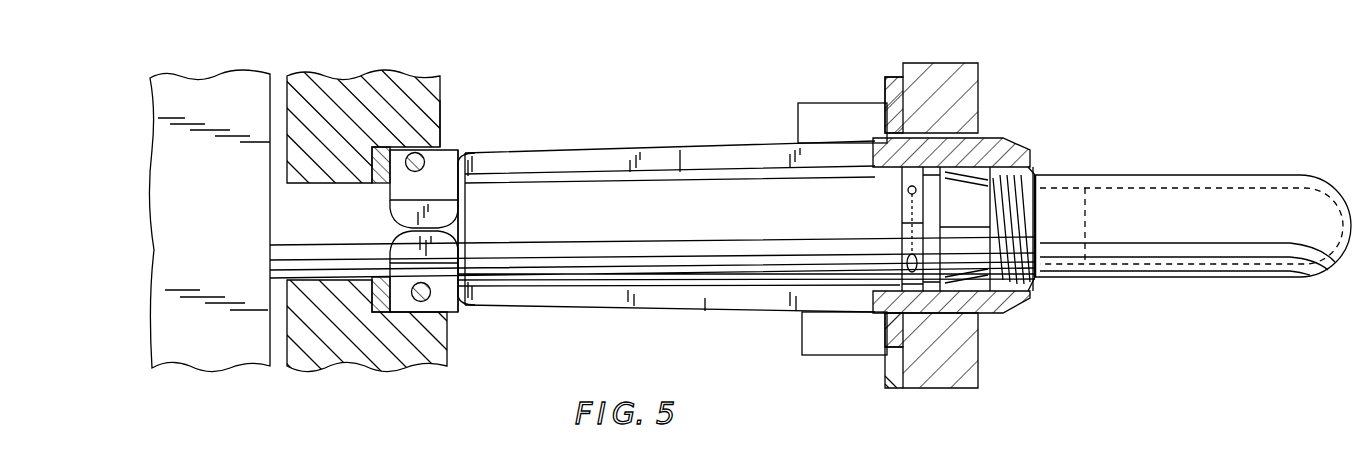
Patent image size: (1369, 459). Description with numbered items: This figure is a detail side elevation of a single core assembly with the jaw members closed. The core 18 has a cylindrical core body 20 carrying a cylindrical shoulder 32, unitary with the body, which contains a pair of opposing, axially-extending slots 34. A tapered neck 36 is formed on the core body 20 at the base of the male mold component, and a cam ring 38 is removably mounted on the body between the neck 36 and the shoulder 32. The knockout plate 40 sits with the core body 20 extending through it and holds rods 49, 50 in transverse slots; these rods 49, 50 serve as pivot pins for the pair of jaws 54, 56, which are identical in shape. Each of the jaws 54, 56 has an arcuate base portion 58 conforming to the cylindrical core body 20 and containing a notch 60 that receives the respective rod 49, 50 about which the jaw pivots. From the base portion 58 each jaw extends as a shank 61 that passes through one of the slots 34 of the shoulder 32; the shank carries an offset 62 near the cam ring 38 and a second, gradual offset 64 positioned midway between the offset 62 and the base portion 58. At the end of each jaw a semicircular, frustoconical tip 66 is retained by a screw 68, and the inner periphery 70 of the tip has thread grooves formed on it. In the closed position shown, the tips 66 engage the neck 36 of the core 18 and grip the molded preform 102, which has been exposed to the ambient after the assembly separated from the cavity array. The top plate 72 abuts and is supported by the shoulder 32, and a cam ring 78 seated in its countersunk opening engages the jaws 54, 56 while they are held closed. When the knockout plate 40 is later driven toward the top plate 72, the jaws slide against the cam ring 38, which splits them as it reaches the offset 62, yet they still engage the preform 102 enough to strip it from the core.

The core 18 is at (631, 258).
The core body 20 is at (580, 186).
The cylindrical shoulder 32 is at (814, 122).
The axially-extending slots 34 is at (835, 108).
The tapered neck 36 is at (1040, 230).
The cam ring 38 is at (902, 195).
The knockout plate 40 is at (448, 358).
The rod 49 is at (442, 128).
The rod 50 is at (448, 318).
The jaw 54 is at (751, 303).
The jaw 56 is at (712, 150).
The base portion 58 is at (447, 160).
The notch 60 is at (425, 282).
The shank 61 is at (748, 156).
The offset 62 is at (862, 140).
The gradual offset 64 is at (683, 170).
The frustoconical tip 66 is at (1024, 140).
The screw 68 is at (978, 100).
The inner periphery 70 is at (1035, 163).
The top plate 72 is at (932, 66).
The cam ring 78 is at (886, 378).
The preform 102 is at (1146, 178).